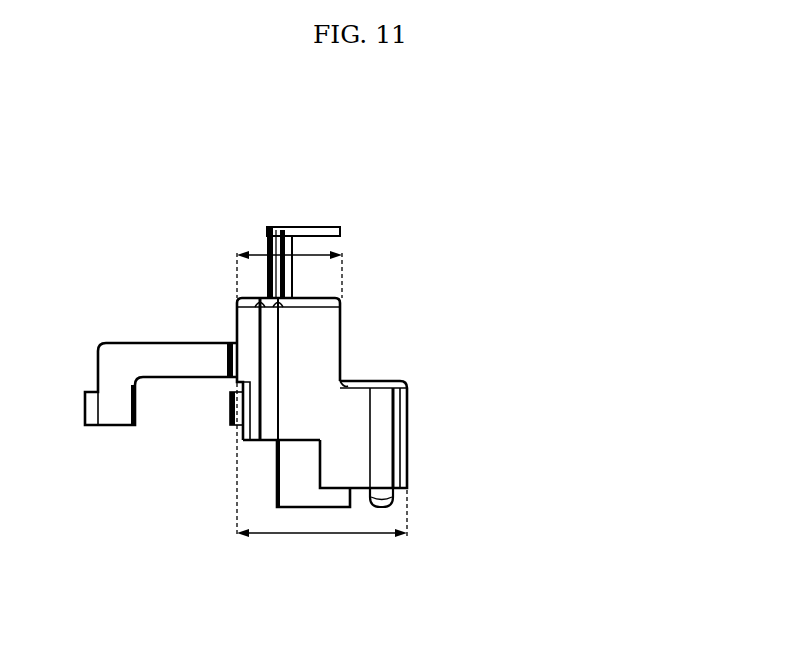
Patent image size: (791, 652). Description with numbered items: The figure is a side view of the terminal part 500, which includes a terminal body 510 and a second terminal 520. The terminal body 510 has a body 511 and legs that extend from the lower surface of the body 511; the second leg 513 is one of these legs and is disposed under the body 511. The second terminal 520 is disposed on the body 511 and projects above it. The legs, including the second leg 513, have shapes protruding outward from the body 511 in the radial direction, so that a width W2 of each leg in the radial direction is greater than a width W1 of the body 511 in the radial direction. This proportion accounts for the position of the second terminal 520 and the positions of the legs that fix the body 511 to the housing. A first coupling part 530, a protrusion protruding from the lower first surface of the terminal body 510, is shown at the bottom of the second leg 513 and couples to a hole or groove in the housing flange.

The terminal part 500 is at (465, 224).
The terminal body 510 is at (351, 402).
The body 511 is at (320, 345).
The second leg 513 is at (357, 440).
The second terminal 520 is at (313, 226).
The first coupling part 530 is at (380, 500).
The width of the body W1 is at (250, 240).
The width of the legs W2 is at (318, 538).